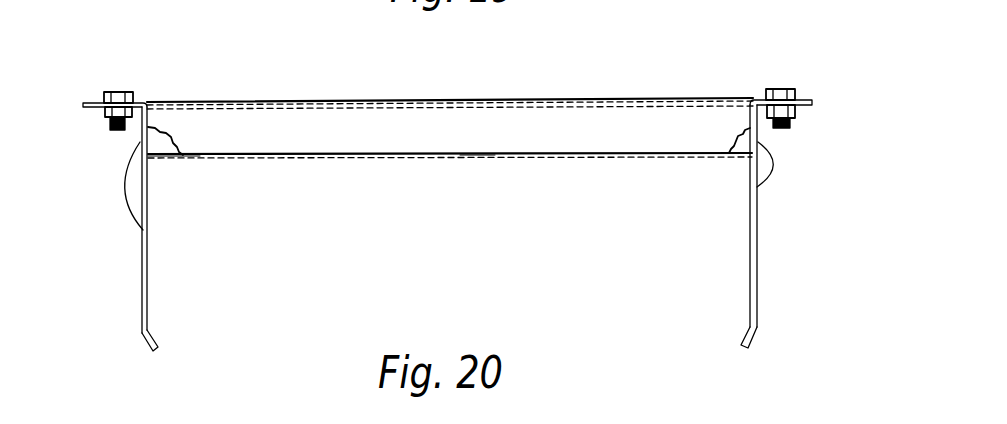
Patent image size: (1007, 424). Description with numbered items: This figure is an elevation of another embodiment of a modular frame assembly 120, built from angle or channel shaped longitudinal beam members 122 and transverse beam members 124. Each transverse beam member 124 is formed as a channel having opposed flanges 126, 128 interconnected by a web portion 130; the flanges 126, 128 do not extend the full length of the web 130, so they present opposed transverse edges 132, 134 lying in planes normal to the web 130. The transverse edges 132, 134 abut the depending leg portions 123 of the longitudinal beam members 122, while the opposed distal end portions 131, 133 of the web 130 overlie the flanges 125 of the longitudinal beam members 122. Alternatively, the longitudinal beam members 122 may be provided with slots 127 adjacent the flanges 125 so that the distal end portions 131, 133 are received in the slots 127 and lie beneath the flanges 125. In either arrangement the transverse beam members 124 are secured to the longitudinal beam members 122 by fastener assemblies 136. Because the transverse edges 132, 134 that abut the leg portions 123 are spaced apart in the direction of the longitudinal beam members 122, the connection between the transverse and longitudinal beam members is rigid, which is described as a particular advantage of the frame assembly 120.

The modular frame assembly 120 is at (862, 91).
The longitudinal beam member 122 is at (148, 250).
The depending leg portion 123 is at (142, 283).
The transverse beam member 124 is at (308, 160).
The flange 125 is at (86, 110).
The flange 126 is at (160, 150).
The slot 127 is at (152, 115).
The flange 128 is at (477, 140).
The web portion 130 is at (350, 102).
The distal end portion 131 is at (98, 105).
The transverse edge 132 is at (150, 231).
The distal end portion 133 is at (812, 100).
The transverse edge 134 is at (140, 143).
The fastener assembly 136 is at (128, 92).